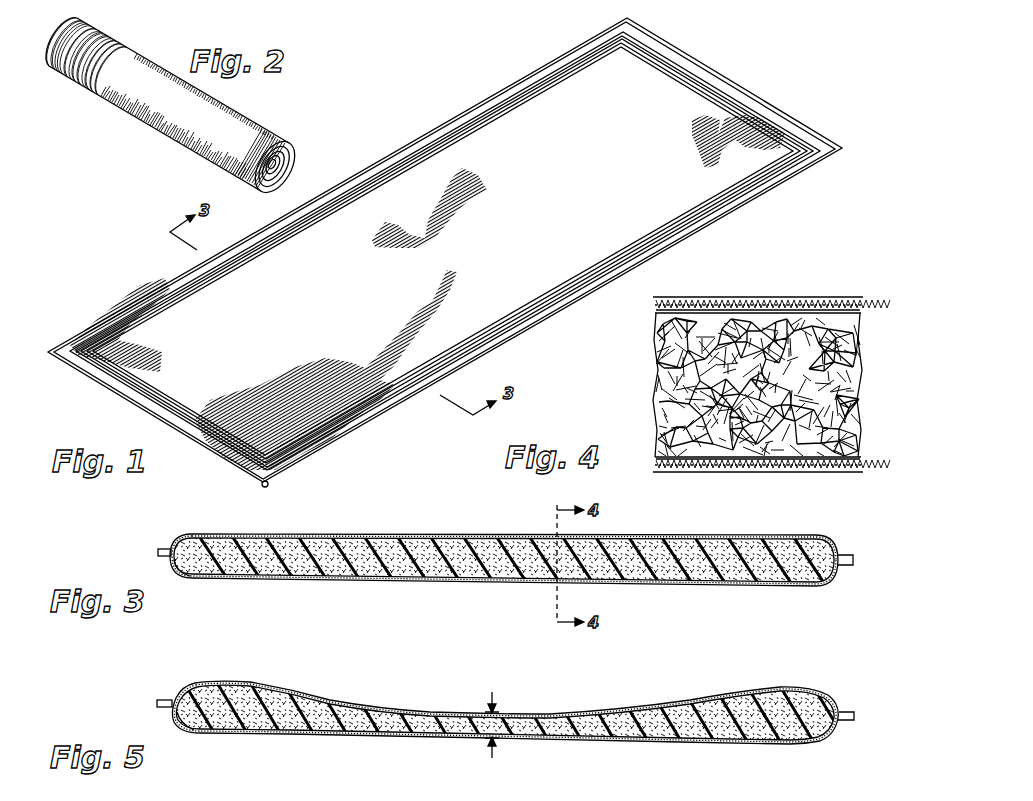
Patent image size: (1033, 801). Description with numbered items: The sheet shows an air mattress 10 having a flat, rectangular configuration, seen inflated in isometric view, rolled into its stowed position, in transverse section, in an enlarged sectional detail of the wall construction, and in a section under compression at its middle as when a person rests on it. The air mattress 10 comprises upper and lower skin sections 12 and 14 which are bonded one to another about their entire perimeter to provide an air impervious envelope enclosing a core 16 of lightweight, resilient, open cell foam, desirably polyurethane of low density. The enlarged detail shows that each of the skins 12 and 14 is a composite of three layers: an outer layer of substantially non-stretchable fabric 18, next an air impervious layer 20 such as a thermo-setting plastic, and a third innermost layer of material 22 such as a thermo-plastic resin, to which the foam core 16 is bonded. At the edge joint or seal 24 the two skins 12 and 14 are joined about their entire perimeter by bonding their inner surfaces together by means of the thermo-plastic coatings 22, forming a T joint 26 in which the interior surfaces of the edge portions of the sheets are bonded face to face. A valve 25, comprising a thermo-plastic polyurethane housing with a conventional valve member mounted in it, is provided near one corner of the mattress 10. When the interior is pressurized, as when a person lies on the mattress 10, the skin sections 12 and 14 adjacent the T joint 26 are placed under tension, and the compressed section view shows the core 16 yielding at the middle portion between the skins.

In FIG. 1, the air mattress 10 is at (521, 70).
In FIG. 2, the air mattress 10 is at (282, 131).
In FIG. 3, the air mattress 10 is at (502, 551).
In FIG. 5, the air mattress 10 is at (493, 709).
In FIG. 3, the upper skin section 12 is at (348, 534).
In FIG. 5, the upper skin section 12 is at (322, 690).
In FIG. 3, the lower skin section 14 is at (364, 584).
In FIG. 5, the lower skin section 14 is at (352, 736).
In FIG. 3, the core 16 is at (318, 574).
In FIG. 4, the core 16 is at (672, 387).
In FIG. 5, the core 16 is at (302, 736).
In FIG. 4, the fabric 18 is at (722, 298).
In FIG. 4, the air impervious layer 20 is at (690, 298).
In FIG. 4, the innermost layer of material 22 is at (660, 312).
In FIG. 3, the edge joint or seal 24 is at (170, 552).
In FIG. 5, the edge joint or seal 24 is at (172, 703).
In FIG. 1, the valve 25 is at (271, 486).
In FIG. 3, the T joint 26 is at (176, 578).
In FIG. 5, the T joint 26 is at (172, 712).